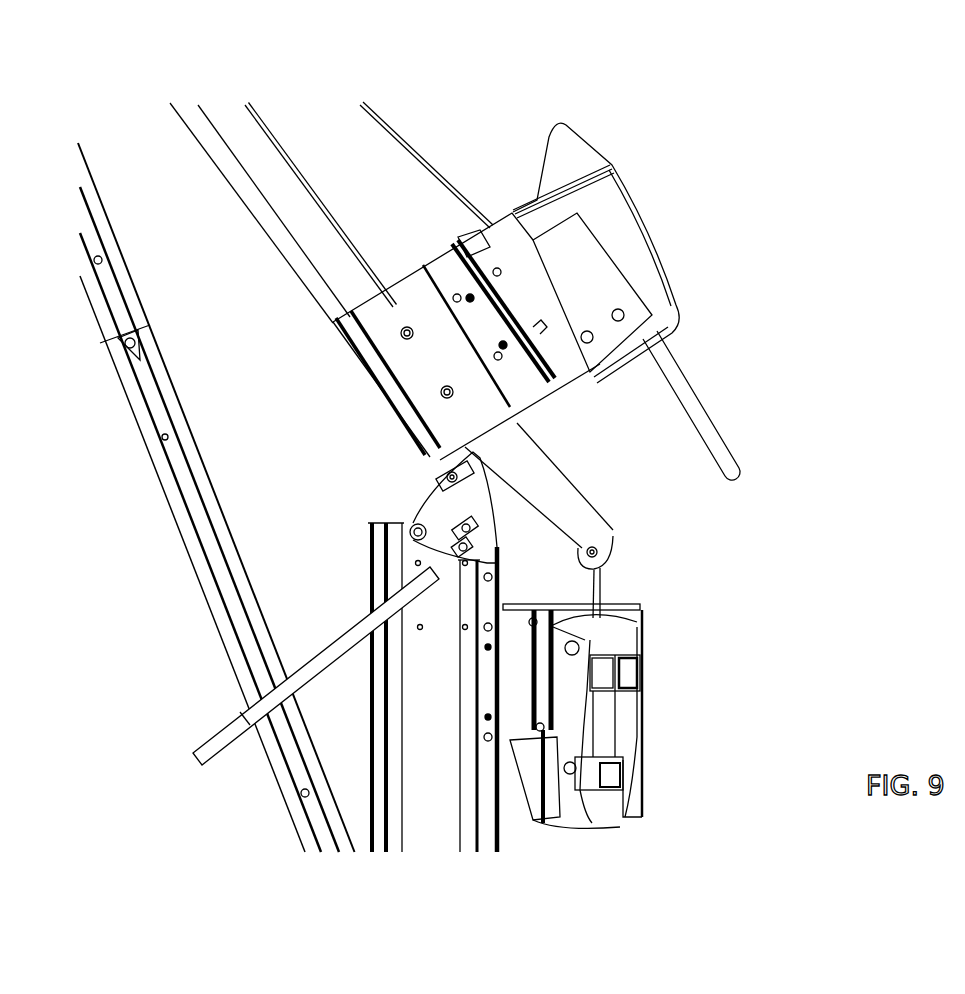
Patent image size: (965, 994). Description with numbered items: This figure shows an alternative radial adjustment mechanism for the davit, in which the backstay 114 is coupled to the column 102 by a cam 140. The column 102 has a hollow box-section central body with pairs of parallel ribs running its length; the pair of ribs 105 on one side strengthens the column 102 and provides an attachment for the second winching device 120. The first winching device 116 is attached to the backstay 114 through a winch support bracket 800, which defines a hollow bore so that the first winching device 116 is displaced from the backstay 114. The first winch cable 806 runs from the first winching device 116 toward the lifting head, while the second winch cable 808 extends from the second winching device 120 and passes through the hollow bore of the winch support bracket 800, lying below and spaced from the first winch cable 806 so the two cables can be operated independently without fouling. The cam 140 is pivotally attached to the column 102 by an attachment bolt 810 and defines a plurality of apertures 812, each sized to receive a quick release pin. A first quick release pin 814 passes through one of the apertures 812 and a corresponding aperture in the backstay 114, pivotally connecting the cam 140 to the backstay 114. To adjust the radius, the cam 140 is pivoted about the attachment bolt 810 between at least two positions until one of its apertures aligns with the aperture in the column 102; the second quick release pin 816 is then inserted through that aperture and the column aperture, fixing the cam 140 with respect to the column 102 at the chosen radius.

The column 102 is at (443, 787).
The pair of ribs 105 is at (487, 596).
The backstay 114 is at (198, 122).
The first winching device 116 is at (648, 220).
The second winching device 120 is at (632, 673).
The cam 140 is at (493, 497).
The winch support bracket 800 is at (403, 293).
The first winch cable 806 is at (407, 142).
The second winch cable 808 is at (282, 145).
The attachment bolt 810 is at (412, 525).
The apertures 812 is at (472, 548).
The first quick release pin 814 is at (462, 476).
The second quick release pin 816 is at (470, 530).